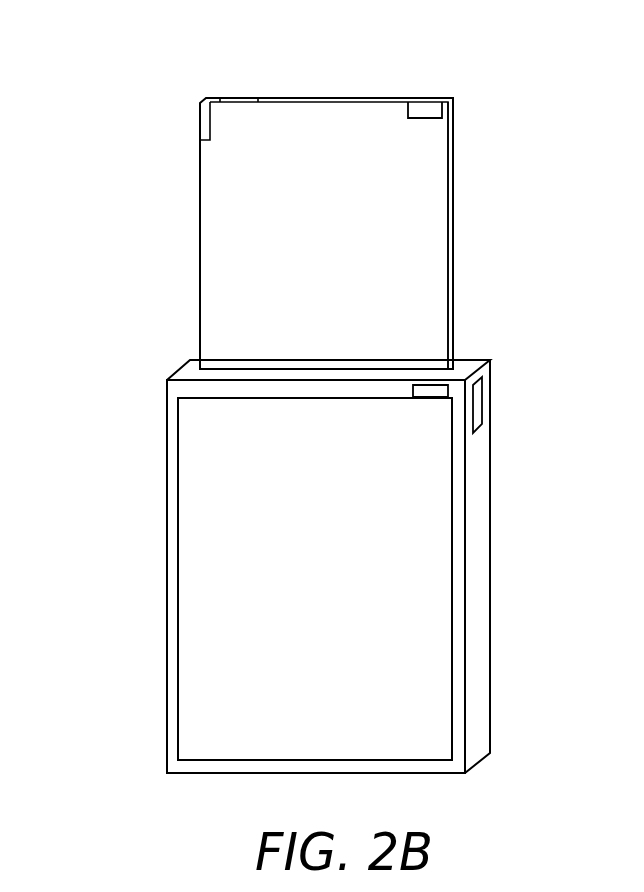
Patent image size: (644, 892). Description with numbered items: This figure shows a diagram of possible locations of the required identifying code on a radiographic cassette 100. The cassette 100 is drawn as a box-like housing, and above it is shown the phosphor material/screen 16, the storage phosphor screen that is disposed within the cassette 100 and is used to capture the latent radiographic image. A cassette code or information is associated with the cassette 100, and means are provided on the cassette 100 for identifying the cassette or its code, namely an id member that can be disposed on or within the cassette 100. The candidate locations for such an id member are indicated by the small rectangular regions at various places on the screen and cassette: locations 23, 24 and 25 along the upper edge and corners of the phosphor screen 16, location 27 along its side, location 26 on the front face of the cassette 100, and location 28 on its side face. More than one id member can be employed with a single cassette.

The phosphor material/screen 16 is at (200, 249).
The candidate location of id member 23 is at (200, 122).
The candidate location of id member 24 is at (247, 97).
The candidate location of id member 25 is at (436, 98).
The candidate location of id member 26 is at (432, 385).
The candidate location of id member 27 is at (453, 322).
The candidate location of id member 28 is at (483, 403).
The cassette 100 is at (490, 562).